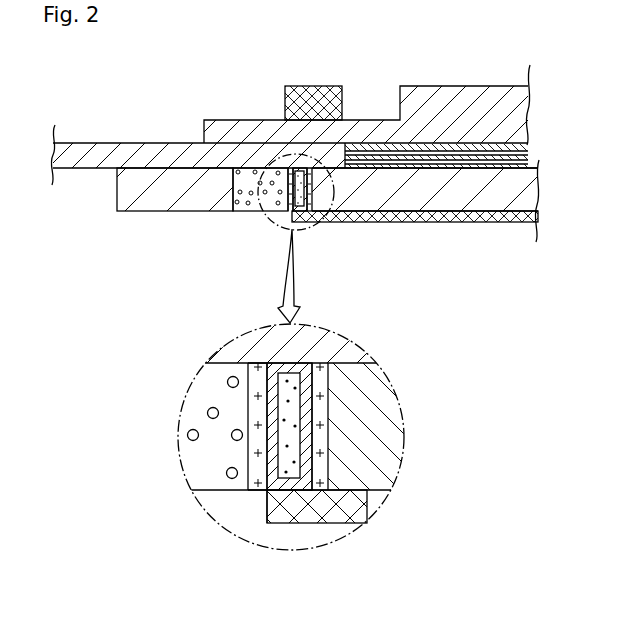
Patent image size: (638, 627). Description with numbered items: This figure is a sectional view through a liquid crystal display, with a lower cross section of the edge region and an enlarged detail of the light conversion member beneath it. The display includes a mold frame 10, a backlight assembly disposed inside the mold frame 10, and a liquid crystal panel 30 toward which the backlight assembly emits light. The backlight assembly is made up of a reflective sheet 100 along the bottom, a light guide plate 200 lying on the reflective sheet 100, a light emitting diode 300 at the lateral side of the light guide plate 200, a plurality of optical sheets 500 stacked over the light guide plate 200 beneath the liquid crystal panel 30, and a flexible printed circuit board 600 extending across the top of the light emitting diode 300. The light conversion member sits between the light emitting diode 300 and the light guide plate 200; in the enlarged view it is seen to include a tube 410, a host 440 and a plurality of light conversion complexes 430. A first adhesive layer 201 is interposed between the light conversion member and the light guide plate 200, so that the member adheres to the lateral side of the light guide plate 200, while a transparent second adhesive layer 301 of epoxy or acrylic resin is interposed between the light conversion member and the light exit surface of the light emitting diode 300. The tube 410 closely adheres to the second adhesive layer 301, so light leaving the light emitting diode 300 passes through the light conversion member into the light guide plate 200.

The mold frame 10 is at (146, 198).
The liquid crystal panel 30 is at (460, 98).
The reflective sheet 100 is at (355, 218).
The light guide plate 200 is at (410, 197).
The first adhesive layer 201 is at (330, 463).
The light emitting diode 300 is at (246, 205).
The second adhesive layer 301 is at (259, 491).
The tube 410 is at (310, 435).
The light conversion complexes 430 is at (318, 366).
The host 440 is at (287, 407).
The optical sheets 500 is at (465, 160).
The flexible printed circuit board 600 is at (149, 166).